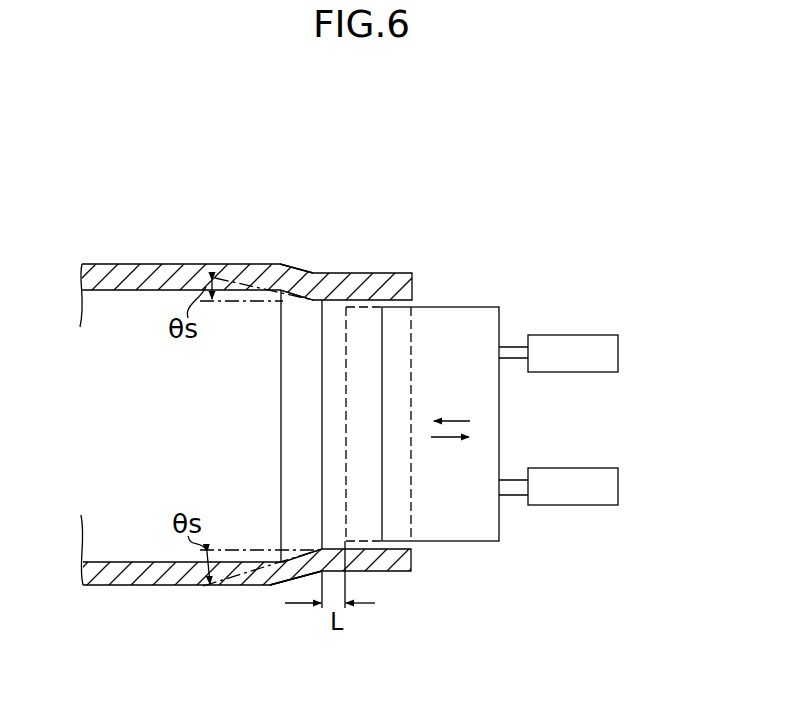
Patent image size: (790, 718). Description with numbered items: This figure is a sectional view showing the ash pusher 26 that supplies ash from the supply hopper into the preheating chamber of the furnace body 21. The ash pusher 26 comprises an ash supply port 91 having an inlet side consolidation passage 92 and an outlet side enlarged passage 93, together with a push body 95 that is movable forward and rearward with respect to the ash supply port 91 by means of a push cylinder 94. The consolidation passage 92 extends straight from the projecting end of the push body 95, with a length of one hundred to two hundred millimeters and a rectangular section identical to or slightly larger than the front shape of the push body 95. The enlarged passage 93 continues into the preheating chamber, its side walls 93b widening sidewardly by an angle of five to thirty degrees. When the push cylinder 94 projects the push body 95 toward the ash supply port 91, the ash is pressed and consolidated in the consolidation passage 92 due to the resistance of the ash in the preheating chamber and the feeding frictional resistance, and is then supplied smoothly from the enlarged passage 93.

The furnace body 21 is at (121, 262).
The ash pusher 26 is at (518, 331).
The ash supply port 91 is at (279, 417).
The consolidation passage 92 is at (337, 507).
The enlarged passage 93 is at (287, 583).
The side walls 93b is at (323, 283).
The push cylinder 94 is at (567, 359).
The push body 95 is at (456, 318).